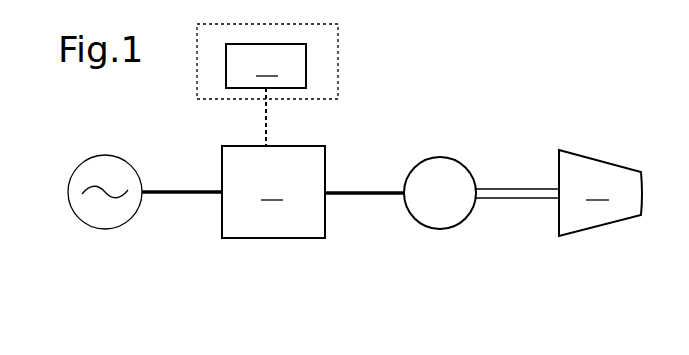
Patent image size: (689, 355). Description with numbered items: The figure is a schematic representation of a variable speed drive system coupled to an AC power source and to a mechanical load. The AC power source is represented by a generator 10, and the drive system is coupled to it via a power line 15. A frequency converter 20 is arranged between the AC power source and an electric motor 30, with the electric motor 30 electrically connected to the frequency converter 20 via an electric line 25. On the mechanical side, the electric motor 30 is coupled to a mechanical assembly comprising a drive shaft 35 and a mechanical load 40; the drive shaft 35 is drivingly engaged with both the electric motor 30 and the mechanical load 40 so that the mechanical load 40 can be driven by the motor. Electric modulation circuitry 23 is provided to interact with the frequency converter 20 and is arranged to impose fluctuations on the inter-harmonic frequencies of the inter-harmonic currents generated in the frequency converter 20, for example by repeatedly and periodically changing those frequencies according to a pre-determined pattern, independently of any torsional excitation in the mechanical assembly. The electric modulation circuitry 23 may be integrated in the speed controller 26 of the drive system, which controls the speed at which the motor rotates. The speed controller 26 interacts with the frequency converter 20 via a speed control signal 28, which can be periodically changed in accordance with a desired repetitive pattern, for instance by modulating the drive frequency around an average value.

The generator 10 is at (110, 230).
The power line 15 is at (180, 195).
The frequency converter 20 is at (273, 192).
The electric modulation circuitry 23 is at (266, 66).
The electric line 25 is at (372, 197).
The speed controller 26 is at (344, 58).
The speed control signal 28 is at (262, 134).
The electric motor 30 is at (421, 163).
The drive shaft 35 is at (527, 195).
The mechanical load 40 is at (600, 193).